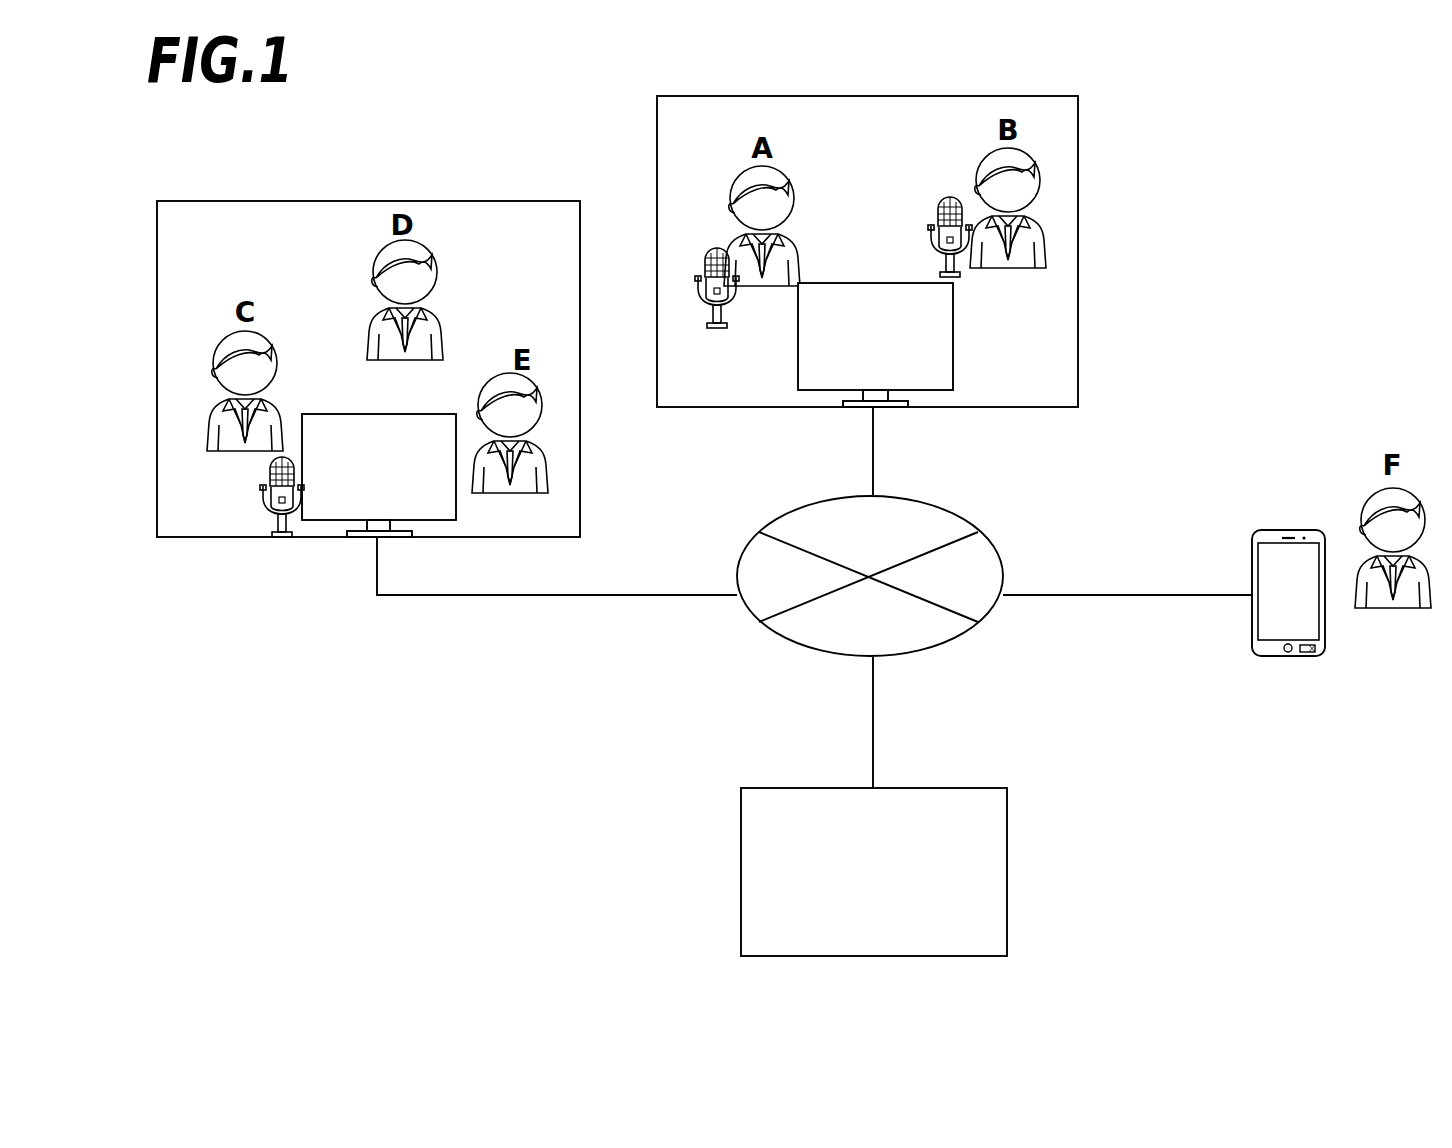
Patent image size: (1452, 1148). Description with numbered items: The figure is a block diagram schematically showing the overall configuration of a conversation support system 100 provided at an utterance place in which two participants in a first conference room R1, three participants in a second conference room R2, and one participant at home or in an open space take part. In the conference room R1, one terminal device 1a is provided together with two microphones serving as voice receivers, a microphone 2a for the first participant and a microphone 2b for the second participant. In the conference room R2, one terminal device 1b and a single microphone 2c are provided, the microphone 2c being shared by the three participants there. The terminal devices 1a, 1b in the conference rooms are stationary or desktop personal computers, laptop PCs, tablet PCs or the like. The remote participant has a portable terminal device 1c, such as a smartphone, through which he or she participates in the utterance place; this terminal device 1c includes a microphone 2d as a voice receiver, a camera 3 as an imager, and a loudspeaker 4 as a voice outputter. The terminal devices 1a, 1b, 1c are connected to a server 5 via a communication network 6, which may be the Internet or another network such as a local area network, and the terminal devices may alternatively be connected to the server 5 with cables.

The conversation support system 100 is at (1210, 110).
The conference room R1 is at (988, 95).
The conference room R2 is at (290, 200).
The terminal device 1a is at (887, 283).
The terminal device 1b is at (340, 415).
The terminal device 1c is at (1277, 658).
The microphone 2a is at (717, 332).
The microphone 2b is at (955, 277).
The microphone 2c is at (265, 495).
The microphone 2d is at (1285, 536).
The camera 3 is at (1305, 534).
The loudspeaker 4 is at (1310, 655).
The server 5 is at (980, 787).
The communication network 6 is at (957, 515).